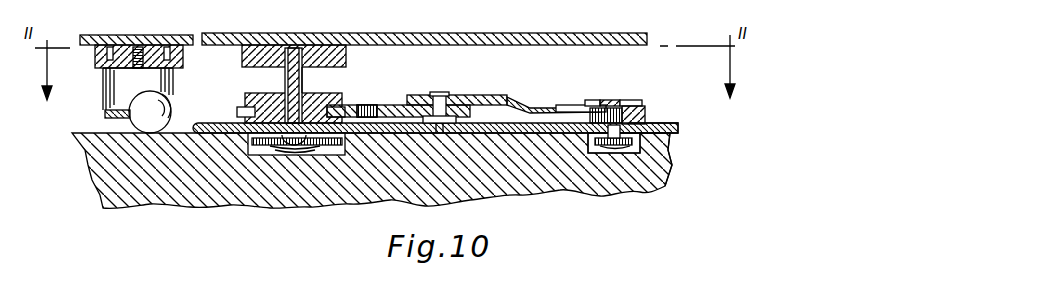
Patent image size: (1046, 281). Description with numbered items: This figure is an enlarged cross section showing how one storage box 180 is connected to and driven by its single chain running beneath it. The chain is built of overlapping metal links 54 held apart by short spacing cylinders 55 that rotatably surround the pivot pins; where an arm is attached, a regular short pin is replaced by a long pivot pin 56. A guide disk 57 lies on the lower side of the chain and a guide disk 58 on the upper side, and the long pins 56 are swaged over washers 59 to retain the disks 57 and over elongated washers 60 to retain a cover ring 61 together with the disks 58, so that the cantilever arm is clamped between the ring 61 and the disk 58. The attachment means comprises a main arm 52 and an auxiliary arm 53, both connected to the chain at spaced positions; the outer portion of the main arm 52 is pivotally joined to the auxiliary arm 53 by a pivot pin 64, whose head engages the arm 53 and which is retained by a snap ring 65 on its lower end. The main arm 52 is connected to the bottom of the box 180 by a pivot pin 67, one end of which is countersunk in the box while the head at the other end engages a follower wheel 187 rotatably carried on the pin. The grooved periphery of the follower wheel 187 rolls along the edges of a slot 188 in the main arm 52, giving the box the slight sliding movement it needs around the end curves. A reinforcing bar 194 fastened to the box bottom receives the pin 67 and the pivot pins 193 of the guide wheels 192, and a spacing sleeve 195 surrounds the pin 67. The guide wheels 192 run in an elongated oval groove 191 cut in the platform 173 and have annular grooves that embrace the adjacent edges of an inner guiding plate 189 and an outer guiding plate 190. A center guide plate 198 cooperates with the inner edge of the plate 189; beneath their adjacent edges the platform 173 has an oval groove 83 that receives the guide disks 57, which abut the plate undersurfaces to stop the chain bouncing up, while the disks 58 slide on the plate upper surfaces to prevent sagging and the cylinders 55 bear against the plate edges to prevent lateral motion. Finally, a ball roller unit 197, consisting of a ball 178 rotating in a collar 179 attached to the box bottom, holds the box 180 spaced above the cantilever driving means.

The box 180 is at (482, 33).
The collar 179 is at (103, 95).
The ball roller unit 197 is at (97, 107).
The ball 178 is at (158, 135).
The platform 173 is at (668, 170).
The outer supporting and guiding plate 190 is at (193, 124).
The center guide plate 198 is at (672, 124).
The reinforcing bar 194 is at (242, 58).
The follower wheel 187 is at (250, 95).
The pivot pin 67 is at (285, 80).
The spacing sleeve 195 is at (304, 88).
The guide wheel 192 is at (238, 112).
The elongated oval groove 191 is at (275, 150).
The pivot pin 193 is at (318, 152).
The slot 188 is at (393, 106).
The main arm 52 is at (398, 97).
The pivot pin 64 is at (440, 93).
The auxiliary arm 53 is at (513, 100).
The snap ring 65 is at (425, 134).
The inner supporting and guiding plate 189 is at (512, 134).
The guide disk 58 is at (580, 108).
The cover ring 61 is at (592, 100).
The elongated washer 60 is at (605, 100).
The long pivot pin 56 is at (615, 100).
The link 54 is at (640, 115).
The spacing cylinder 55 is at (588, 140).
The oval groove 83 is at (600, 153).
The washer 59 is at (620, 153).
The guide disk 57 is at (640, 150).